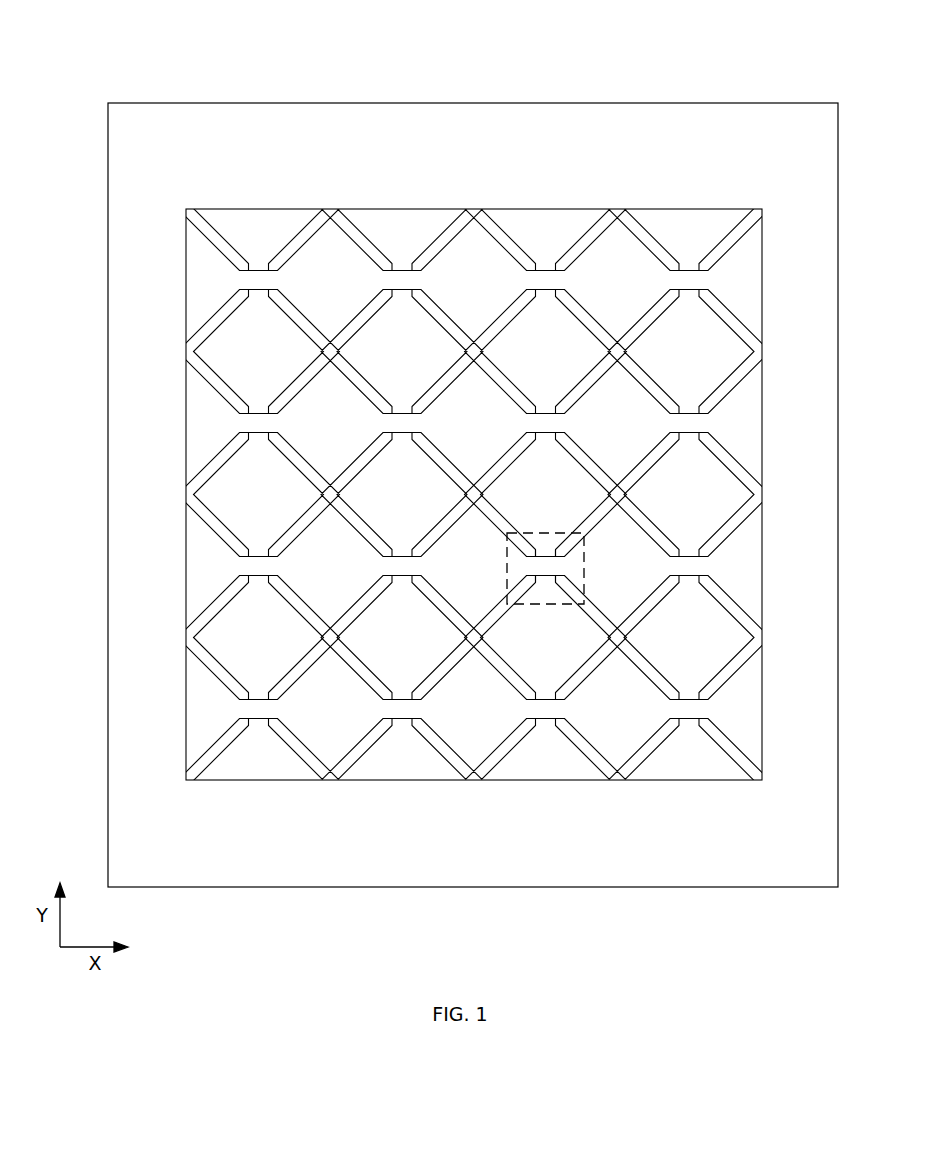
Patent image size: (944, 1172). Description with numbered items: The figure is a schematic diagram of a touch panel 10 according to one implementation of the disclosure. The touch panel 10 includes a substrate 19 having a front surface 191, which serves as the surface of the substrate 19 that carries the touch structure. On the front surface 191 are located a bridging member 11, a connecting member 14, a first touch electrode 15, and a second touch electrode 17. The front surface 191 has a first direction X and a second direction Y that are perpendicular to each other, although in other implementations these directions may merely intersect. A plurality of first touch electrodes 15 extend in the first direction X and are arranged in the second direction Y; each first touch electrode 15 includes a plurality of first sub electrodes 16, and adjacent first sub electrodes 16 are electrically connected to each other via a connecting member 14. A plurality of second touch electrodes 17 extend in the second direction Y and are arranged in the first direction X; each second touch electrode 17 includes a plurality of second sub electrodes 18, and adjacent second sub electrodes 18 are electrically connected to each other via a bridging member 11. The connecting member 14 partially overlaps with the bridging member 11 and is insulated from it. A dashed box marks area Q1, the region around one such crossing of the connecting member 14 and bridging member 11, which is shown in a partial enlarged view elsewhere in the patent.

The touch panel 10 is at (482, 60).
The bridging member 11 is at (546, 638).
The connecting member 14 is at (546, 566).
The first touch electrode 15 is at (643, 538).
The first sub electrode 16 is at (402, 638).
The second touch electrode 17 is at (572, 504).
The second sub electrode 18 is at (546, 638).
The substrate 19 is at (770, 892).
The front surface 191 is at (798, 865).
The area Q1 is at (585, 574).